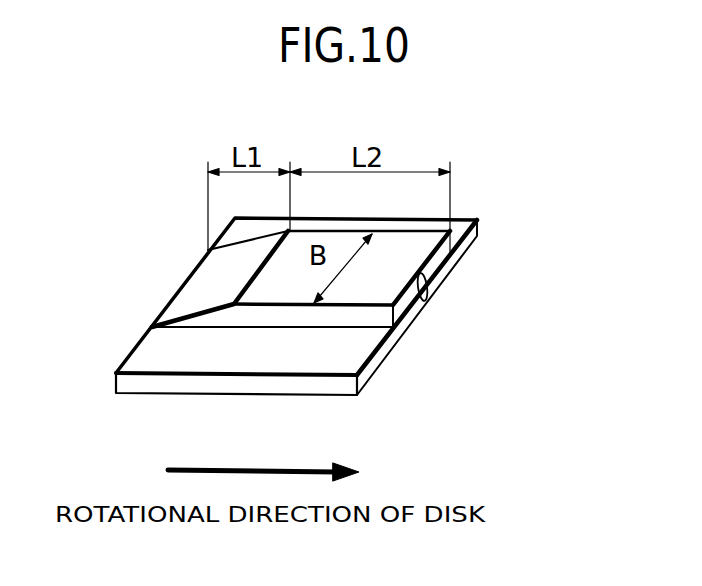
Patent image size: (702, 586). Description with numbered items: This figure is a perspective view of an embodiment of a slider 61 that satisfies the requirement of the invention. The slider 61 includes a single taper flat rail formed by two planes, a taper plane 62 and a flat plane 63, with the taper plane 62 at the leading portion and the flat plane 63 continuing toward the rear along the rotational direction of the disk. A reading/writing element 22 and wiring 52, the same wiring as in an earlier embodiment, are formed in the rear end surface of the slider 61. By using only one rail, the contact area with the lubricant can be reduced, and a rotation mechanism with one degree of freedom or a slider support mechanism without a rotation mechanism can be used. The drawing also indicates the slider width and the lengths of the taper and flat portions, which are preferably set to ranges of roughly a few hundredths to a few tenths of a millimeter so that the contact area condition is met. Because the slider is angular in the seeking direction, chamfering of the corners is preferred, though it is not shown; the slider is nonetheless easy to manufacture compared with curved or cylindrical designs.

The reading/writing element 22 is at (428, 276).
The wiring 52 is at (425, 303).
The slider 61 is at (165, 343).
The taper plane 62 is at (208, 293).
The flat plane 63 is at (365, 290).